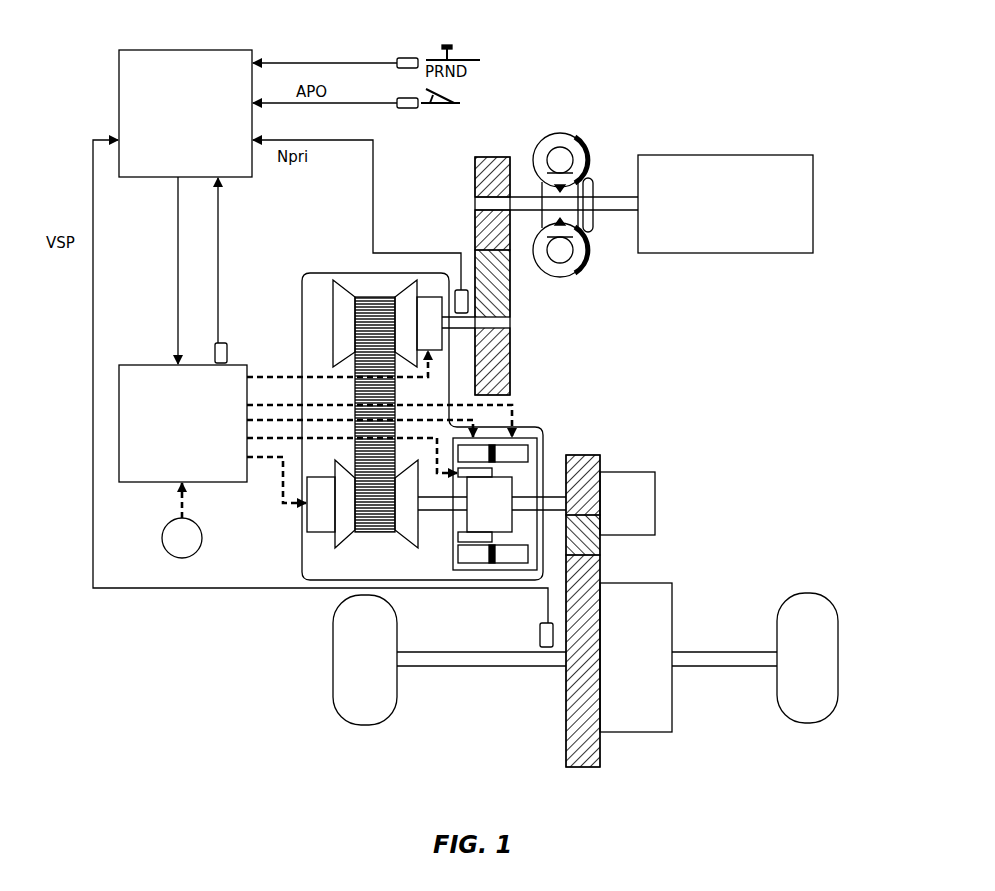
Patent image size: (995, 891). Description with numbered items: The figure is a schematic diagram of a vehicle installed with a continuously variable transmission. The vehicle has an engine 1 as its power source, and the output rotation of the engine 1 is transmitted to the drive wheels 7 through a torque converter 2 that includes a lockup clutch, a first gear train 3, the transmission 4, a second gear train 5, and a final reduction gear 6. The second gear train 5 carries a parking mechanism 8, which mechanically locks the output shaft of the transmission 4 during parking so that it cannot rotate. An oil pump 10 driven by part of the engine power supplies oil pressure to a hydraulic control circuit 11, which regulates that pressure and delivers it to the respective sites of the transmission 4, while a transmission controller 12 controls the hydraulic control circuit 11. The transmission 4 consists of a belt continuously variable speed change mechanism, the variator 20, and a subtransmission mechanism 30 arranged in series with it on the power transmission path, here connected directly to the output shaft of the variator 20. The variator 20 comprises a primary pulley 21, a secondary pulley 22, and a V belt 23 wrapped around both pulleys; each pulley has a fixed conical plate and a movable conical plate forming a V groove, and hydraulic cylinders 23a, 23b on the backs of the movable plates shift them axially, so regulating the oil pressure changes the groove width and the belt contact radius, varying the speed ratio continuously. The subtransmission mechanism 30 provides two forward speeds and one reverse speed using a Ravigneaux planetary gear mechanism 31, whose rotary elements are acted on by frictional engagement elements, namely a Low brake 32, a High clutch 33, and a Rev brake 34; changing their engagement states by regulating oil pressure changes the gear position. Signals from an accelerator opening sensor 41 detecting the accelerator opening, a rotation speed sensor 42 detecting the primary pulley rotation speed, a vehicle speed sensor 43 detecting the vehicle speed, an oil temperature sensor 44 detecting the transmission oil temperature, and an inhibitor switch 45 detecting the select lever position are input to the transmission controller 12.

The engine 1 is at (800, 168).
The torque converter 2 is at (588, 160).
The first gear train 3 is at (493, 154).
The transmission 4 is at (345, 273).
The second gear train 5 is at (585, 772).
The final reduction gear 6 is at (635, 718).
The drive wheels 7 is at (365, 712).
The parking mechanism 8 is at (637, 494).
The oil pump 10 is at (165, 530).
The hydraulic control circuit 11 is at (140, 366).
The transmission controller 12 is at (237, 58).
The variator 20 is at (316, 297).
The primary pulley 21 is at (345, 325).
The secondary pulley 22 is at (347, 520).
The V belt 23 is at (378, 295).
The hydraulic cylinder 23a is at (428, 320).
The hydraulic cylinder 23b is at (318, 513).
The subtransmission mechanism 30 is at (543, 440).
The Ravigneaux planetary gear mechanism 31 is at (492, 500).
The Low brake 32 is at (478, 455).
The High clutch 33 is at (455, 548).
The Rev brake 34 is at (510, 455).
The accelerator opening sensor 41 is at (405, 108).
The rotation speed sensor 42 is at (460, 290).
The vehicle speed sensor 43 is at (540, 633).
The oil temperature sensor 44 is at (227, 352).
The inhibitor switch 45 is at (407, 58).